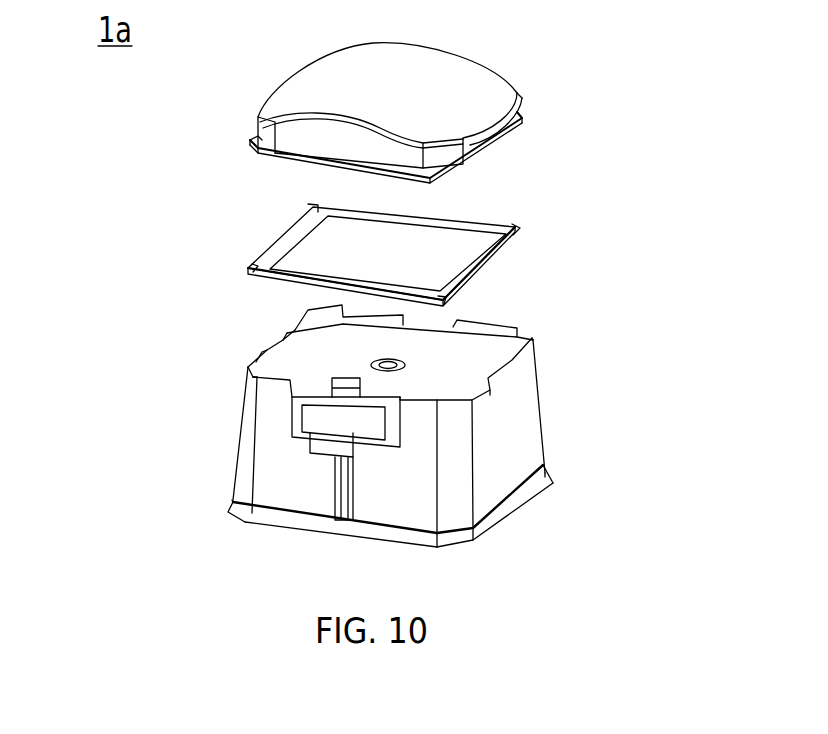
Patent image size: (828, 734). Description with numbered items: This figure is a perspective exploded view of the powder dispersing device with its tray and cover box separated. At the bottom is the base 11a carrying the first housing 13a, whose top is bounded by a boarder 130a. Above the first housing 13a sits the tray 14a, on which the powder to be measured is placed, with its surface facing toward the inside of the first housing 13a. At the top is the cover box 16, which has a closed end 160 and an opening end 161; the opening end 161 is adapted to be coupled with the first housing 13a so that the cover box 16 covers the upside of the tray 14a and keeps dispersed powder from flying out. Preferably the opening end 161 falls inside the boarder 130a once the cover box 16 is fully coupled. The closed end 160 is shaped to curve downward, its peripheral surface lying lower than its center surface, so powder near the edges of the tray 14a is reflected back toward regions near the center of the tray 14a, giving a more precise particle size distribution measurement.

The closed end 160 is at (447, 63).
The cover box 16 is at (431, 97).
The opening end 161 is at (498, 124).
The tray 14a is at (520, 247).
The boarder 130a is at (257, 355).
The first housing 13a is at (528, 383).
The base 11a is at (547, 483).